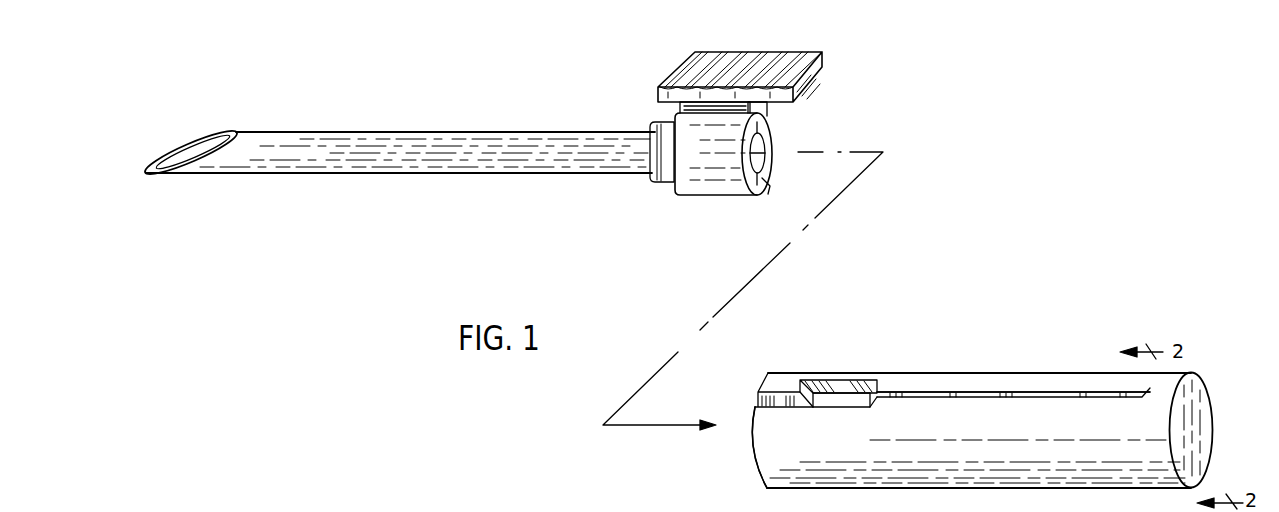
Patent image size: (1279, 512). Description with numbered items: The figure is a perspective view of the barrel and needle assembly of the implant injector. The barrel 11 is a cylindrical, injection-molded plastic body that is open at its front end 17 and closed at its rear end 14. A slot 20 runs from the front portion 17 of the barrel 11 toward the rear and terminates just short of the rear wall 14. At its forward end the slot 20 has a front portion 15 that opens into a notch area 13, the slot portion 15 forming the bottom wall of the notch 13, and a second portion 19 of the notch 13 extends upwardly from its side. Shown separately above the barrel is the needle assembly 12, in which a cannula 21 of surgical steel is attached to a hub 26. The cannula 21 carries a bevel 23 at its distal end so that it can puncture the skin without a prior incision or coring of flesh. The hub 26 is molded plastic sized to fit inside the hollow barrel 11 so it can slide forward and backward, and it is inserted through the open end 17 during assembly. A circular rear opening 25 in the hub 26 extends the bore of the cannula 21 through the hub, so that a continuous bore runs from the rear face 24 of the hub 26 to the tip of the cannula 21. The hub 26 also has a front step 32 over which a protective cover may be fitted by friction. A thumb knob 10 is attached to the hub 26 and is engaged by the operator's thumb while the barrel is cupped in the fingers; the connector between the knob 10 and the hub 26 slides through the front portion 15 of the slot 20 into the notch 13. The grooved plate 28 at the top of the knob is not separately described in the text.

The knob 10 is at (650, 94).
The needle assembly 12 is at (458, 108).
The cannula 21 is at (560, 160).
The bevel 23 is at (147, 177).
The front step 32 is at (660, 183).
The hub 26 is at (700, 183).
The rear face 24 is at (768, 118).
The rear opening 25 is at (763, 185).
The serrated finger plate 28 is at (822, 53).
The barrel 11 is at (1055, 373).
The notch area 13 is at (850, 403).
The rear end 14 is at (1197, 400).
The front portion of slot 15 is at (760, 402).
The front end 17 is at (753, 453).
The second portion of notch 19 is at (832, 386).
The slot 20 is at (980, 392).